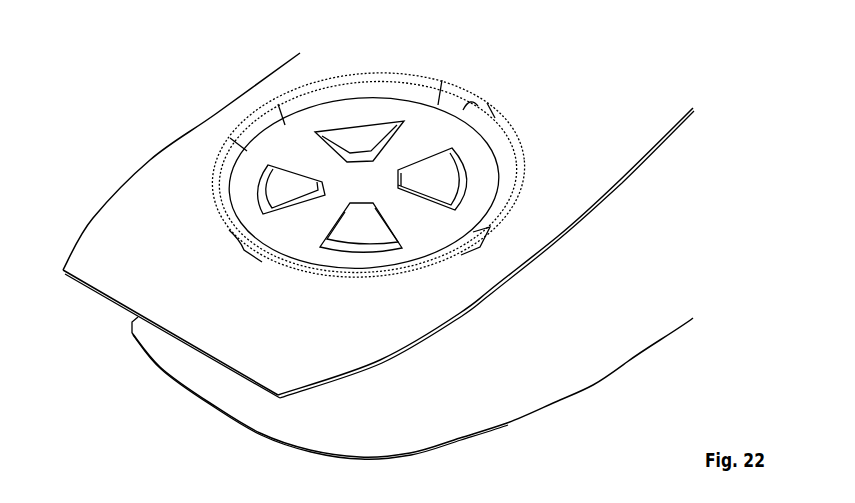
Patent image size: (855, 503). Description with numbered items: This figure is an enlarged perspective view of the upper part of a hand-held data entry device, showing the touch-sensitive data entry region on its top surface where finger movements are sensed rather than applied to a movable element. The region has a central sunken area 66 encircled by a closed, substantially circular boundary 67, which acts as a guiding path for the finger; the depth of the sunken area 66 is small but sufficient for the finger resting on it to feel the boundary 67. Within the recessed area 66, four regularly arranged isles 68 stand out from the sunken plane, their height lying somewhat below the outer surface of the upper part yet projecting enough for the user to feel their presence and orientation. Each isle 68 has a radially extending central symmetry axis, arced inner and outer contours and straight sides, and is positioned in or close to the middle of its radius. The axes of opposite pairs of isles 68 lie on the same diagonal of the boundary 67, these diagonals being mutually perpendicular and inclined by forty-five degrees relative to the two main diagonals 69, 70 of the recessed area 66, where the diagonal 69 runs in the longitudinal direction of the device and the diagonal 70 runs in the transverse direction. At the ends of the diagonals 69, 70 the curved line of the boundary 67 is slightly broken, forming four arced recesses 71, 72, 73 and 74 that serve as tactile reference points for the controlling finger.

The central sunken area 66 is at (292, 254).
The boundary 67 is at (377, 75).
The isles 68 is at (363, 245).
The main diagonal 69 is at (447, 127).
The main diagonal 70 is at (494, 268).
The arced recess 71 is at (468, 90).
The arced recess 72 is at (477, 253).
The arced recess 73 is at (262, 265).
The arced recess 74 is at (236, 133).